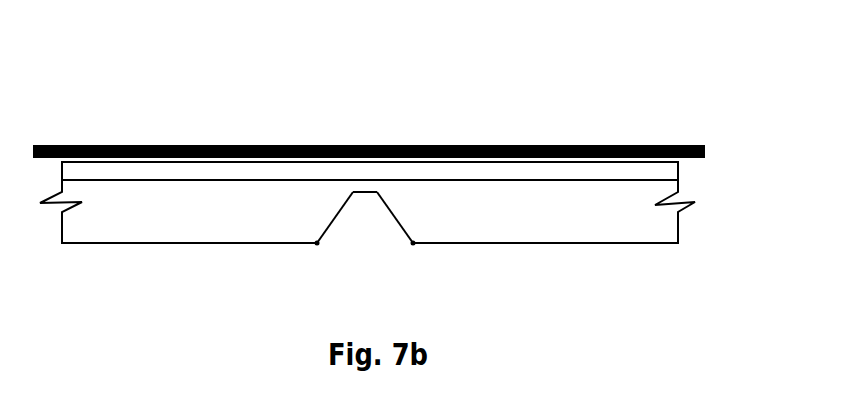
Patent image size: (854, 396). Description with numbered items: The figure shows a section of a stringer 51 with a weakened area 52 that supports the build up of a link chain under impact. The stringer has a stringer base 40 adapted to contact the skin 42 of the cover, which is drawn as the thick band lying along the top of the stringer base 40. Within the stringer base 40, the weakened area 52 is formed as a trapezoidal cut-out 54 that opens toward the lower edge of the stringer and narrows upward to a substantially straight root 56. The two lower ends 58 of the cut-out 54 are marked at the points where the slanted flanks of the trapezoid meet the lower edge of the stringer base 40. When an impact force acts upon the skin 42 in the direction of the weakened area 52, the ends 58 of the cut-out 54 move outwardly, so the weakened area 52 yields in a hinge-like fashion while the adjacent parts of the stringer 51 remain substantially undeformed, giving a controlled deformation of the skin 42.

The stringer base 40 is at (637, 176).
The skin 42 is at (267, 145).
The stringer 51 is at (478, 100).
The weakened area 52 is at (387, 253).
The trapezoidal cut-out 54 is at (372, 217).
The root 56 is at (365, 195).
The ends of the cut-out 58 is at (315, 242).